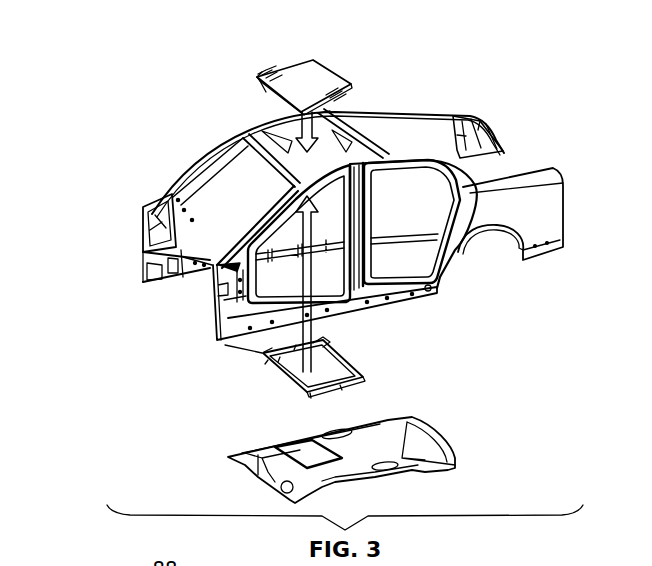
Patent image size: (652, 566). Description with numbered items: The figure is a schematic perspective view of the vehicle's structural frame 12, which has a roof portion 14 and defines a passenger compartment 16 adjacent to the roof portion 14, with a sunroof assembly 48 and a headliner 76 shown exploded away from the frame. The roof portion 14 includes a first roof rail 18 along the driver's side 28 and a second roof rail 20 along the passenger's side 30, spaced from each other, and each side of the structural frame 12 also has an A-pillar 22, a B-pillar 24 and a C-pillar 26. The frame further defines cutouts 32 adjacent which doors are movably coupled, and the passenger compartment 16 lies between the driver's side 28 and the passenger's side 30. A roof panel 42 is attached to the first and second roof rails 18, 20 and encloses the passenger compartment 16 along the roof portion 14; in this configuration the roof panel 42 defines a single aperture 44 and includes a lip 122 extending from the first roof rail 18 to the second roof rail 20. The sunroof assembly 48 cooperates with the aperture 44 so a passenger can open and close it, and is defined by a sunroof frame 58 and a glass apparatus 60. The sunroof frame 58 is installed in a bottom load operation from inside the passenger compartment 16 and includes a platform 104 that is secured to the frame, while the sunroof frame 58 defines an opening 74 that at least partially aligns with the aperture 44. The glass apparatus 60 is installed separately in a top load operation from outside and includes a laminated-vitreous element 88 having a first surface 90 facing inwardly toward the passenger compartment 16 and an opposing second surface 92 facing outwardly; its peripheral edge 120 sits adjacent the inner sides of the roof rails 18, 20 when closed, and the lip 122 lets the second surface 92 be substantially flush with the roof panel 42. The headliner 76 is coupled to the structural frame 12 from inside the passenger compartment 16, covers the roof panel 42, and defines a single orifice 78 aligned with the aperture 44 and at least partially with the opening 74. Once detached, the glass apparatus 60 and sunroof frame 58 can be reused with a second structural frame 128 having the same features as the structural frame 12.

The structural frame 12 is at (519, 103).
The second structural frame 128 is at (566, 130).
The roof portion 14 is at (407, 95).
The roof panel 42 is at (399, 103).
The second roof rail 20 is at (248, 133).
The cutout 32 is at (185, 195).
The passenger's side 30 is at (142, 216).
The passenger compartment 16 is at (197, 283).
The aperture 44 is at (349, 139).
The lip 122 is at (377, 155).
The laminated-vitreous element 88 is at (338, 82).
The glass apparatus 60 is at (315, 62).
The peripheral edge 120 is at (289, 63).
The sunroof assembly 48 is at (275, 62).
The second surface 92 is at (263, 69).
The first surface 90 is at (263, 91).
The A-pillar 22 is at (280, 243).
The B-pillar 24 is at (364, 230).
The first roof rail 18 is at (385, 168).
The C-pillar 26 is at (505, 170).
The driver's side 28 is at (237, 351).
The opening 74 is at (318, 370).
The sunroof frame 58 is at (340, 392).
The platform 104 is at (325, 394).
The headliner 76 is at (391, 443).
The orifice 78 is at (325, 475).